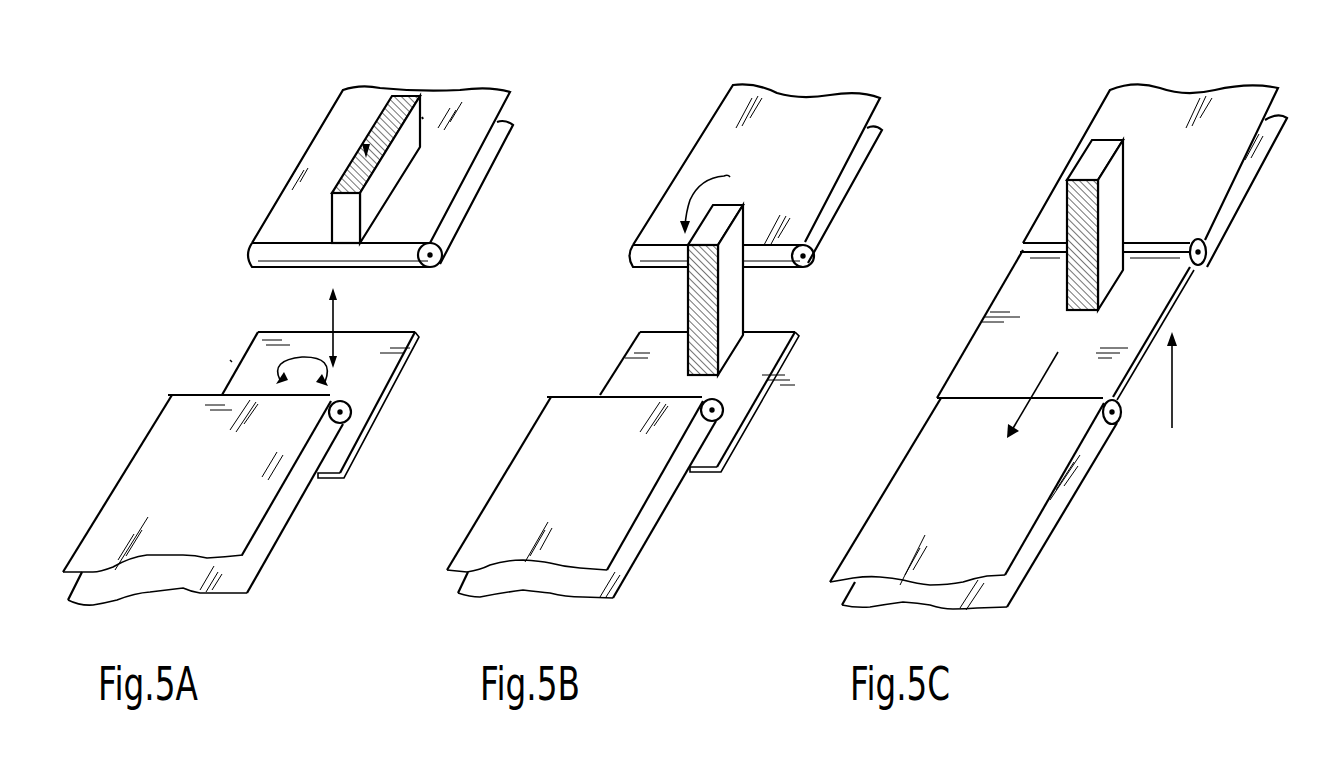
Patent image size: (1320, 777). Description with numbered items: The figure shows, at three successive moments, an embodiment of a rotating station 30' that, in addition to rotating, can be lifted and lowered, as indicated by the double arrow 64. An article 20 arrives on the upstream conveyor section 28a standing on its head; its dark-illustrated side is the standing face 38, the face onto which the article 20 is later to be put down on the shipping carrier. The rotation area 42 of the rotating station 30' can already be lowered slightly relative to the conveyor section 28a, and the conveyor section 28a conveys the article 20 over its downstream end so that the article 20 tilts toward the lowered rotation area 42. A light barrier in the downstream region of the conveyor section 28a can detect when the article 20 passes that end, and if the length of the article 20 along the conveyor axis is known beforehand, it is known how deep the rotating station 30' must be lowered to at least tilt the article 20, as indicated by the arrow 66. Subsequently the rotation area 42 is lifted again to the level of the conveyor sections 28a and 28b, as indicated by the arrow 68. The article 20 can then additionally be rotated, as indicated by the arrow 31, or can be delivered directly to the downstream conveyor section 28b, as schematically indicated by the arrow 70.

In FIG. 5A, the article 20 is at (422, 117).
In FIG. 5B, the article 20 is at (733, 203).
In FIG. 5C, the article 20 is at (1125, 194).
In FIG. 5A, the conveyor section 28a is at (272, 207).
In FIG. 5B, the conveyor section 28a is at (845, 205).
In FIG. 5C, the conveyor section 28a is at (1077, 150).
In FIG. 5A, the conveyor section 28b is at (128, 457).
In FIG. 5B, the conveyor section 28b is at (662, 525).
In FIG. 5C, the conveyor section 28b is at (882, 492).
In FIG. 5A, the rotating station 30' is at (195, 309).
In FIG. 5A, the arrow 31 is at (297, 357).
In FIG. 5A, the standing face 38 is at (363, 138).
In FIG. 5A, the rotation area 42 is at (362, 384).
In FIG. 5B, the rotation area 42 is at (699, 402).
In FIG. 5C, the rotation area 42 is at (1065, 325).
In FIG. 5A, the double arrow 64 is at (337, 318).
In FIG. 5B, the arrow 66 is at (698, 193).
In FIG. 5C, the arrow 68 is at (1175, 380).
In FIG. 5C, the arrow 70 is at (1042, 377).